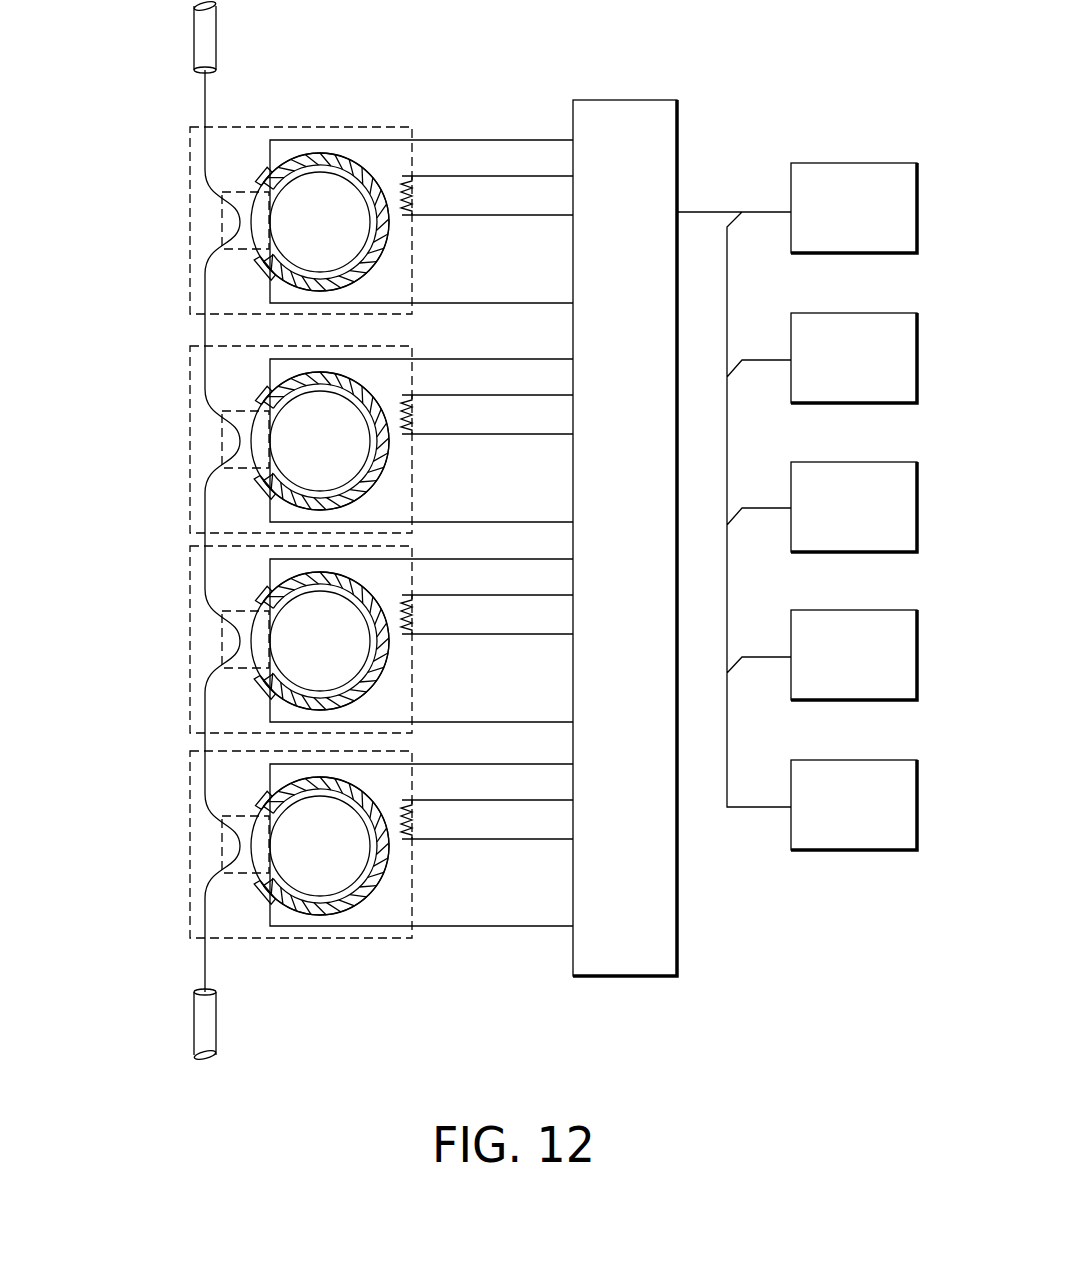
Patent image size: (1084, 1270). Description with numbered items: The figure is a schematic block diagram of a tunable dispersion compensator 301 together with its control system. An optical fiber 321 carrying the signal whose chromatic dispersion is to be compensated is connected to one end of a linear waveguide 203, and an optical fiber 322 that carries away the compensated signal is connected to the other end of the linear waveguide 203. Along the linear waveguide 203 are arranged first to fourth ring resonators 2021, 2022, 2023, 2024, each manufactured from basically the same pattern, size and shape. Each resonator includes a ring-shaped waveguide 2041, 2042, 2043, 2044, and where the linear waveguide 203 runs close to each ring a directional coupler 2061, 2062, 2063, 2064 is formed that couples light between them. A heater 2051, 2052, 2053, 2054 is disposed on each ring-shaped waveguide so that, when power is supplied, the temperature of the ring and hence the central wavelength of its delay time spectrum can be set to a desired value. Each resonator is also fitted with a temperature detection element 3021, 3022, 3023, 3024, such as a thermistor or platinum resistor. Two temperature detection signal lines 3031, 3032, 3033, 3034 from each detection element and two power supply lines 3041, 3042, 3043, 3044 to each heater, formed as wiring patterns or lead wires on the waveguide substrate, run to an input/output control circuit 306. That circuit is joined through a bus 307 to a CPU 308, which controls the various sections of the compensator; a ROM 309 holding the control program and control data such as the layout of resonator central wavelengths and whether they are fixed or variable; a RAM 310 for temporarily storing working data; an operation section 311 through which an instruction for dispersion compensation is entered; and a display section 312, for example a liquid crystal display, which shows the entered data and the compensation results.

The tunable dispersion compensator 301 is at (850, 67).
The linear waveguide 203 is at (205, 97).
The optical fiber 321 is at (208, 35).
The optical fiber 322 is at (208, 1025).
The first ring resonator 2021 is at (190, 162).
The second ring resonator 2022 is at (190, 381).
The third ring resonator 2023 is at (190, 581).
The fourth ring resonator 2024 is at (190, 786).
The directional coupler 2061 is at (222, 220).
The directional coupler 2062 is at (222, 439).
The directional coupler 2063 is at (222, 639).
The directional coupler 2064 is at (222, 844).
The ring-shaped waveguide 2041 is at (342, 165).
The ring-shaped waveguide 2042 is at (342, 384).
The ring-shaped waveguide 2043 is at (342, 584).
The ring-shaped waveguide 2044 is at (342, 789).
The heater 2051 is at (372, 258).
The heater 2052 is at (372, 477).
The heater 2053 is at (372, 677).
The heater 2054 is at (372, 882).
The temperature detection element 3021 is at (412, 196).
The temperature detection element 3022 is at (412, 415).
The temperature detection element 3023 is at (412, 615).
The temperature detection element 3024 is at (412, 820).
The temperature detection signal lines 3031 is at (502, 215).
The temperature detection signal lines 3032 is at (502, 434).
The temperature detection signal lines 3033 is at (502, 634).
The temperature detection signal lines 3034 is at (502, 839).
The power supply lines 3041 is at (505, 138).
The power supply lines 3042 is at (505, 357).
The power supply lines 3043 is at (450, 559).
The power supply lines 3044 is at (450, 764).
The input/output control circuit 306 is at (618, 100).
The bus 307 is at (714, 212).
The CPU 308 is at (852, 162).
The ROM 309 is at (852, 312).
The RAM 310 is at (852, 461).
The operation section 311 is at (852, 609).
The display section 312 is at (852, 759).